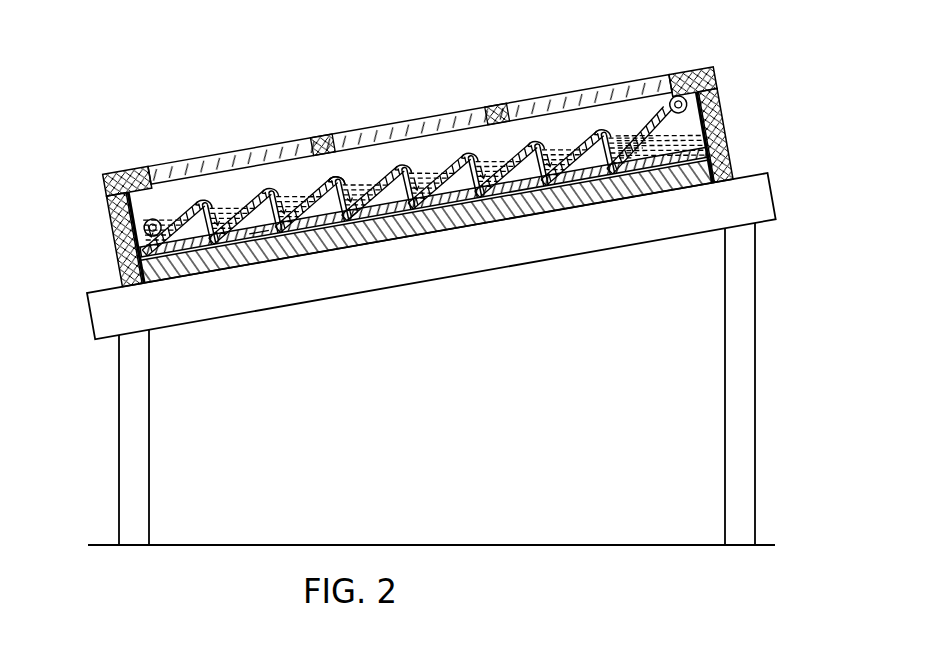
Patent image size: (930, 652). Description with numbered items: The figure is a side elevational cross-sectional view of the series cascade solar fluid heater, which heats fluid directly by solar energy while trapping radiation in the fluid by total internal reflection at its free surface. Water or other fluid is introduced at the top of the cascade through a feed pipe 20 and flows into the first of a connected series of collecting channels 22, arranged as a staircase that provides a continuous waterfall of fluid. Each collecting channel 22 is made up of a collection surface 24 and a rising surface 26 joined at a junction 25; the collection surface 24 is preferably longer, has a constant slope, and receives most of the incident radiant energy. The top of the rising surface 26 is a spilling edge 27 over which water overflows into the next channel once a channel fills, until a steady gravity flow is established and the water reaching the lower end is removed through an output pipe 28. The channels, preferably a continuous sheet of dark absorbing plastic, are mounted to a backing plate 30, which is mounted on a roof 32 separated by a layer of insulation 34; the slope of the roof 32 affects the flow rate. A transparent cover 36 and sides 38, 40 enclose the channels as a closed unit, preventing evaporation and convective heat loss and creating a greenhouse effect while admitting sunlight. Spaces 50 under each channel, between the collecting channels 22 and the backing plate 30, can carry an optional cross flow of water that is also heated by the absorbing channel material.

The feed pipe 20 is at (707, 97).
The collecting channels 22 is at (427, 163).
The collection surface 24 is at (575, 138).
The junction 25 is at (563, 178).
The rising surface 26 is at (349, 210).
The spilling edge 27 is at (334, 178).
The output pipe 28 is at (150, 222).
The backing plate 30 is at (313, 228).
The roof 32 is at (392, 262).
The layer of insulation 34 is at (363, 240).
The transparent cover 36 is at (237, 160).
The side 38 is at (108, 212).
The side 40 is at (725, 135).
The spaces 50 is at (263, 222).